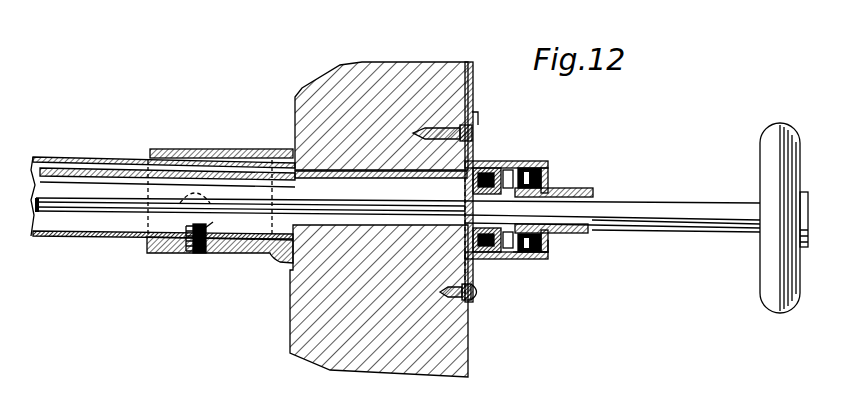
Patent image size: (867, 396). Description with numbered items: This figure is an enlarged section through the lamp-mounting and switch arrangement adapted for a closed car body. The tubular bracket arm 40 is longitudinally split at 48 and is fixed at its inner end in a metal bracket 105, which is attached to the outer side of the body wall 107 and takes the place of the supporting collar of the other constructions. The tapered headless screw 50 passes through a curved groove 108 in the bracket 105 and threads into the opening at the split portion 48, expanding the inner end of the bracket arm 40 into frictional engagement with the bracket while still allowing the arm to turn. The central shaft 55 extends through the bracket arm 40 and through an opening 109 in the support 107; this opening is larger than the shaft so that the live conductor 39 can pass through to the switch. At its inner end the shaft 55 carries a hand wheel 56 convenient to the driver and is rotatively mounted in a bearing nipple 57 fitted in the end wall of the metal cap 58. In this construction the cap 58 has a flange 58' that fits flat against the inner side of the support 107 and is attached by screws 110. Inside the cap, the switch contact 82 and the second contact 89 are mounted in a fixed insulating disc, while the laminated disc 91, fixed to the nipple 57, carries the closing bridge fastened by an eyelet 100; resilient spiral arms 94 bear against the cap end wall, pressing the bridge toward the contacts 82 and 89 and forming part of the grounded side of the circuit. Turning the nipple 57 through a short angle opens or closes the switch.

The live conductor 39 is at (125, 172).
The tubular bracket arm 40 is at (97, 162).
The split portion 48 is at (125, 236).
The tapered headless screw 50 is at (192, 253).
The shaft 55 is at (68, 188).
The hand wheel 56 is at (778, 130).
The bearing nipple 57 is at (584, 189).
The metal cap 58 is at (510, 196).
The flange 58' is at (489, 98).
The switch contact 82 is at (515, 173).
The second contact 89 is at (510, 248).
The laminated disc 91 is at (543, 173).
The spiral arms 94 is at (548, 250).
The eyelet 100 is at (528, 260).
The metal bracket 105 is at (243, 248).
The body wall 107 is at (413, 68).
The curved groove 108 is at (205, 229).
The opening 109 is at (295, 270).
The screws 110 is at (472, 131).